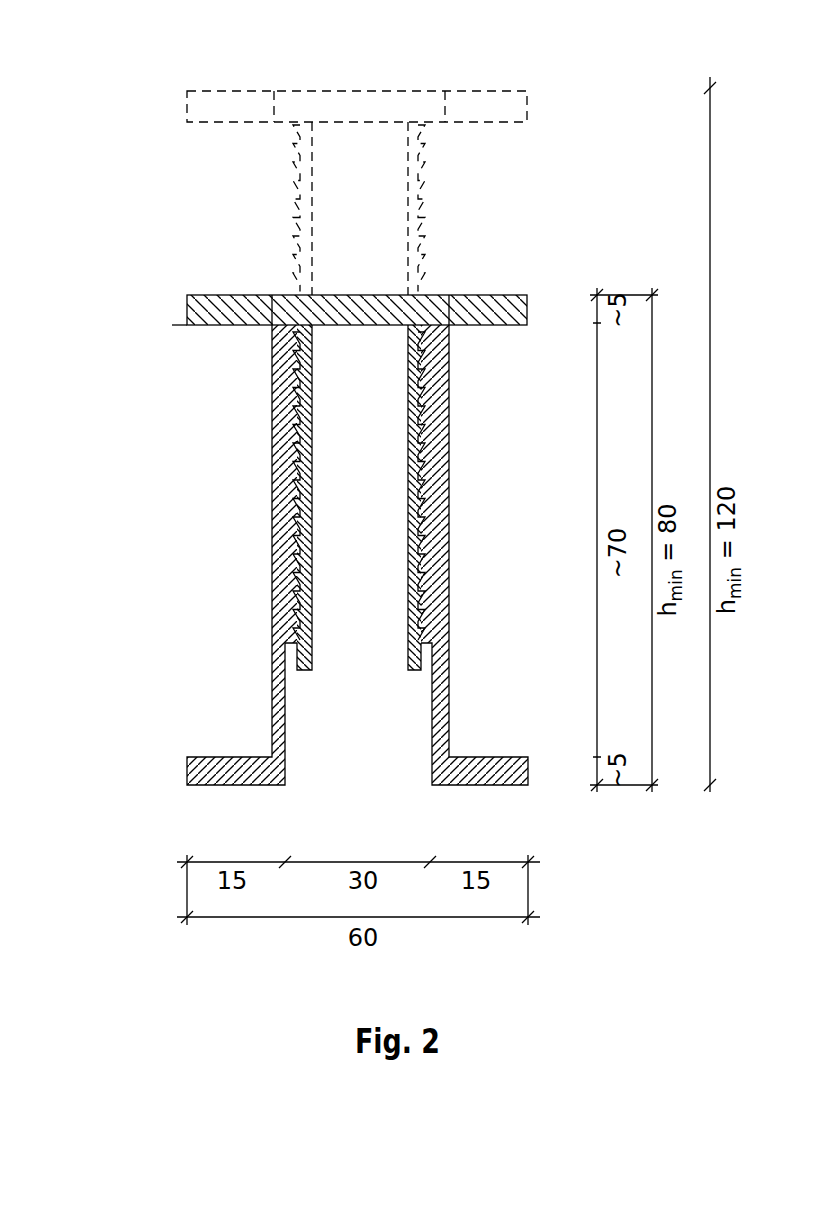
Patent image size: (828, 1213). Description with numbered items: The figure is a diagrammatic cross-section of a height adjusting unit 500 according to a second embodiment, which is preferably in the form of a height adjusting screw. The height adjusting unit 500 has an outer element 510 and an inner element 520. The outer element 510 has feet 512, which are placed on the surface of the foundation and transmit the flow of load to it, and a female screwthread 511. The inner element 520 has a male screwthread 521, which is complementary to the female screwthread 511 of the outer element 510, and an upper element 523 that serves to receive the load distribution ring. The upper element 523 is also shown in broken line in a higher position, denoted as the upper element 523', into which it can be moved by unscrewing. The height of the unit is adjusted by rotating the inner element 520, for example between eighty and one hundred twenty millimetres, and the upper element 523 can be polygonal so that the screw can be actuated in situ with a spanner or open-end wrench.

The height adjusting unit 500 is at (135, 217).
The upper element in raised position 523' is at (342, 153).
The upper element 523 is at (342, 281).
The inner element 520 is at (433, 309).
The male screwthread 521 is at (424, 402).
The female screwthread 511 is at (424, 578).
The outer element 510 is at (443, 698).
The feet 512 is at (484, 785).